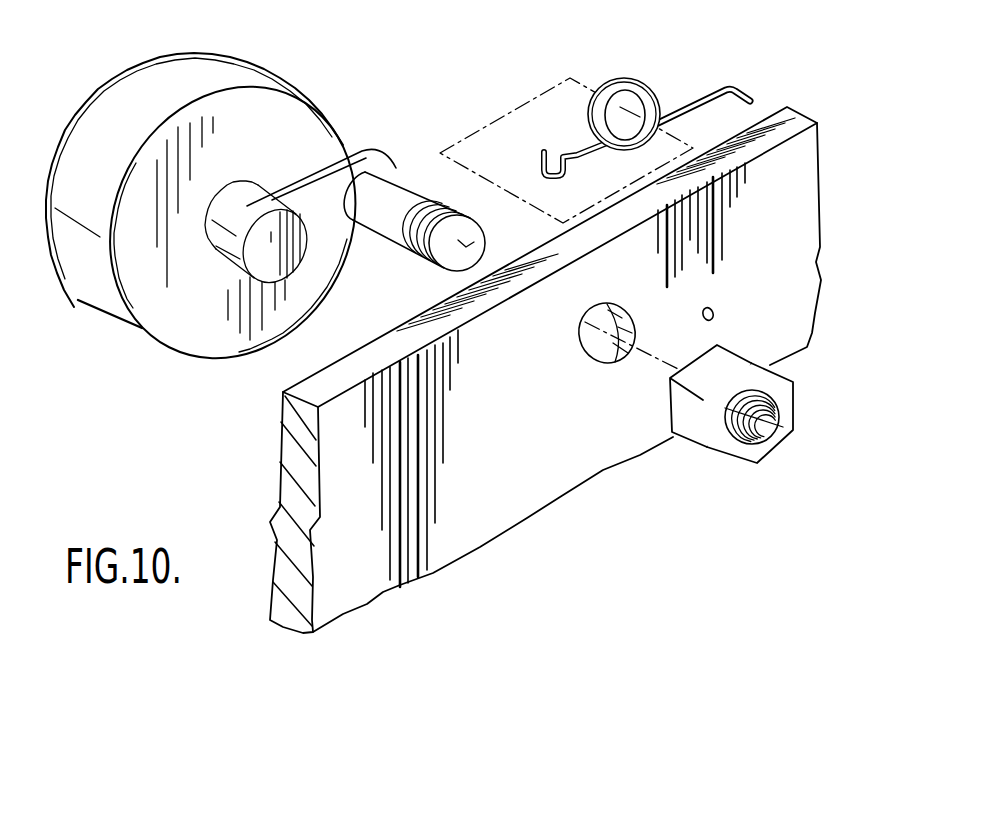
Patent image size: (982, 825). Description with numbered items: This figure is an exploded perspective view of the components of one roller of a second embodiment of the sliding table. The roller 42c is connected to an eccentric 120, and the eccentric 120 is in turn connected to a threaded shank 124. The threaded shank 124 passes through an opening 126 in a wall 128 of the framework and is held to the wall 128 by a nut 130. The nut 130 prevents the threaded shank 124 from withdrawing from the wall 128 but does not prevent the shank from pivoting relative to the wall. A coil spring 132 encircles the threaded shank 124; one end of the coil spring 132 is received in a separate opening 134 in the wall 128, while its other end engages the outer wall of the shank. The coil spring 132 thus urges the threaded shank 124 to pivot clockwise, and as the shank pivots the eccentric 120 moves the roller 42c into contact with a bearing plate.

The roller 42c is at (278, 82).
The eccentric 120 is at (375, 153).
The threaded shank 124 is at (380, 247).
The opening 126 is at (577, 343).
The wall 128 is at (522, 500).
The nut 130 is at (737, 468).
The coil spring 132 is at (633, 78).
The opening 134 is at (713, 317).